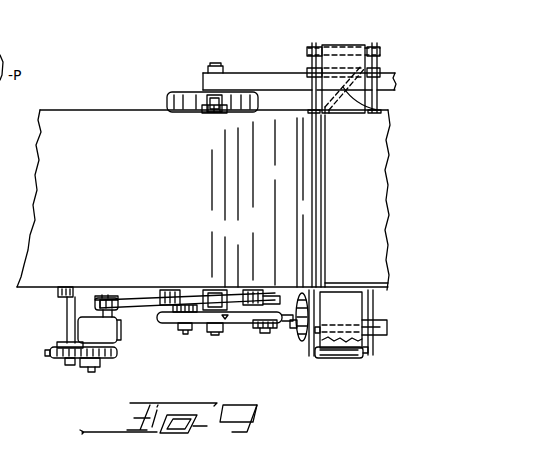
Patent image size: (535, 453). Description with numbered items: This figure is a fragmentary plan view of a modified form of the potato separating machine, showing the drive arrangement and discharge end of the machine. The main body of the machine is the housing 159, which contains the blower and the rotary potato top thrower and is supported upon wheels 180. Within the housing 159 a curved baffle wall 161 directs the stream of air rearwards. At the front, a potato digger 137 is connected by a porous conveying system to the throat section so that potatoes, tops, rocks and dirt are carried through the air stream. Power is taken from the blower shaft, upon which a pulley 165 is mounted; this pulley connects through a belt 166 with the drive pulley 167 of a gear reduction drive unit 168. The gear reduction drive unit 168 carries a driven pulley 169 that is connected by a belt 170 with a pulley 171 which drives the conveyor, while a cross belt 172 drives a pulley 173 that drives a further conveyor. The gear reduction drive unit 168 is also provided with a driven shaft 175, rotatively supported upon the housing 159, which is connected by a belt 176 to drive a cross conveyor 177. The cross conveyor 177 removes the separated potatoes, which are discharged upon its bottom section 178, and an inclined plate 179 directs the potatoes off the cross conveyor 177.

The potato digger 137 is at (312, 13).
The housing 159 is at (325, 192).
The curved baffle wall 161 is at (316, 165).
The pulley 165 is at (60, 358).
The belt 166 is at (48, 353).
The drive pulley 167 is at (113, 360).
The gear reduction drive unit 168 is at (108, 331).
The driven pulley 169 is at (96, 297).
The belt 170 is at (133, 306).
The pulley 171 is at (178, 320).
The cross belt 172 is at (240, 323).
The pulley 173 is at (265, 326).
The driven shaft 175 is at (140, 298).
The belt 176 is at (298, 322).
The cross conveyor 177 is at (349, 366).
The bottom section 178 is at (338, 354).
The inclined plate 179 is at (380, 108).
The wheels 180 is at (175, 92).